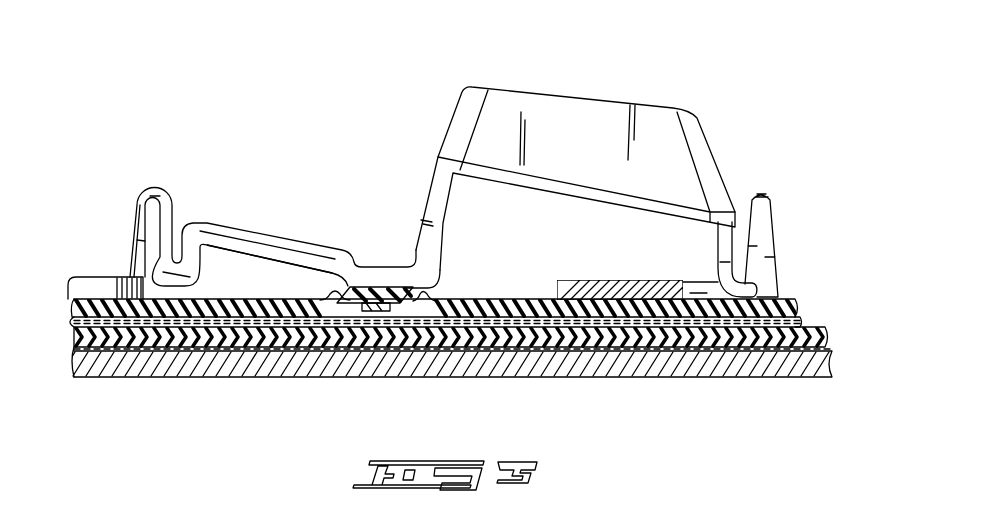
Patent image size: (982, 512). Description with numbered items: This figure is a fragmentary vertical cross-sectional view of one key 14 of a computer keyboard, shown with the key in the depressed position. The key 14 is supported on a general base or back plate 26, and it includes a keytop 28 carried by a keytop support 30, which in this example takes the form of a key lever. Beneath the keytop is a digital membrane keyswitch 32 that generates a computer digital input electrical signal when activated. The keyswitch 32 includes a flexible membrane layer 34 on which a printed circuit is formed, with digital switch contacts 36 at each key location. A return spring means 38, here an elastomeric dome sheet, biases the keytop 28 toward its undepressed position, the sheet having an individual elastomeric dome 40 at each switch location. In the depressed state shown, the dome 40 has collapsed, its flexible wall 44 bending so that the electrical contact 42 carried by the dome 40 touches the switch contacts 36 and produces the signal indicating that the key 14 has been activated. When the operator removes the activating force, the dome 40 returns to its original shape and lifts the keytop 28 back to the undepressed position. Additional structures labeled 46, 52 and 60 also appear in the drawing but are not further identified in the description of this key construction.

The key 14 is at (577, 105).
The base or back plate 26 is at (804, 366).
The keytop 28 is at (652, 101).
The keytop support 30 is at (287, 231).
The digital membrane keyswitch 32 is at (431, 285).
The flexible membrane layer 34 is at (70, 318).
The digital switch contacts 36 is at (378, 318).
The return spring means 38 is at (527, 299).
The elastomeric dome 40 is at (306, 284).
The electrical contact 42 is at (381, 322).
The flexible wall 44 is at (329, 304).
The adhesive layer 46 is at (738, 348).
The flexible circuit layer 52 is at (797, 323).
The retention hook 60 is at (716, 246).